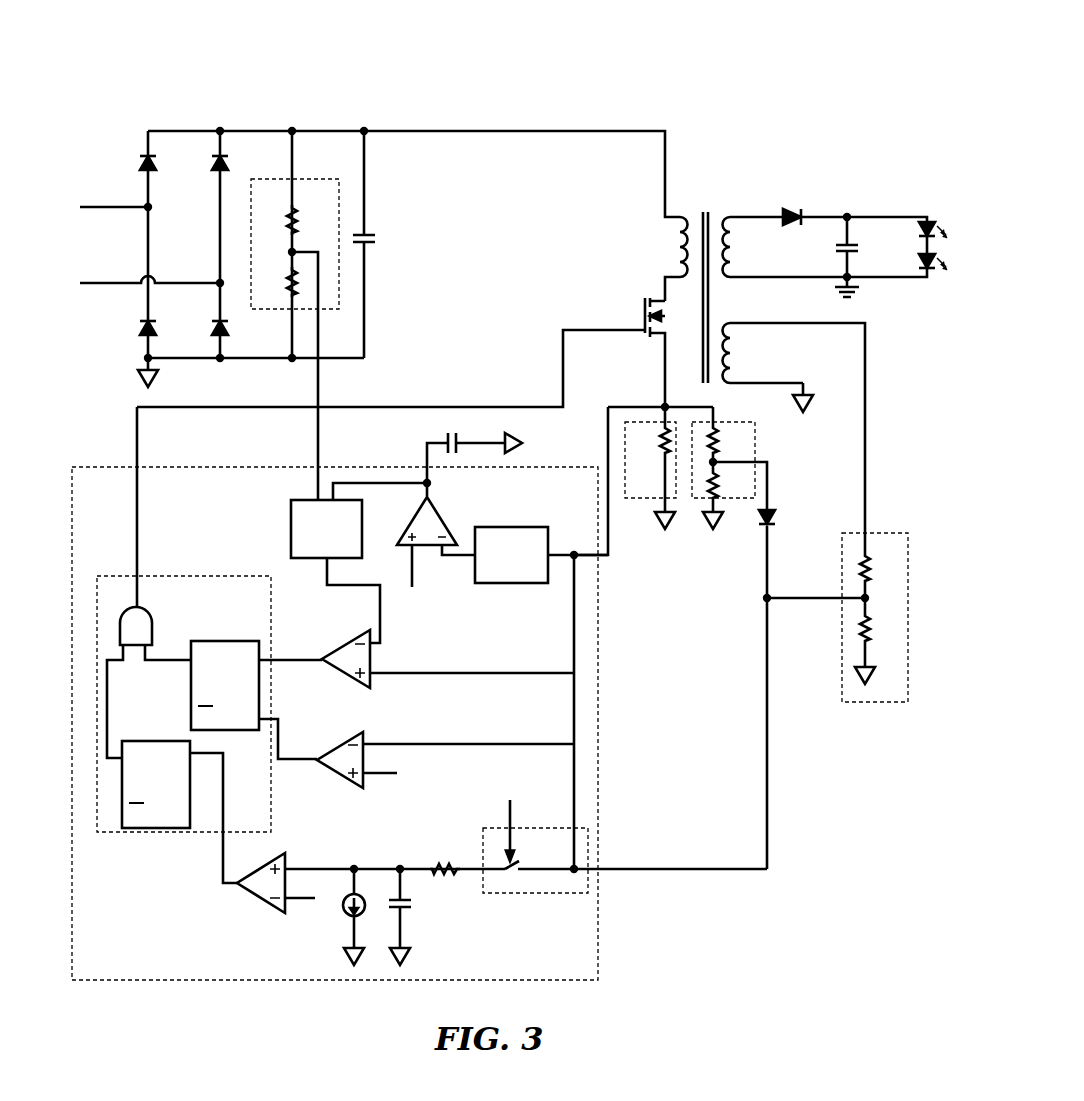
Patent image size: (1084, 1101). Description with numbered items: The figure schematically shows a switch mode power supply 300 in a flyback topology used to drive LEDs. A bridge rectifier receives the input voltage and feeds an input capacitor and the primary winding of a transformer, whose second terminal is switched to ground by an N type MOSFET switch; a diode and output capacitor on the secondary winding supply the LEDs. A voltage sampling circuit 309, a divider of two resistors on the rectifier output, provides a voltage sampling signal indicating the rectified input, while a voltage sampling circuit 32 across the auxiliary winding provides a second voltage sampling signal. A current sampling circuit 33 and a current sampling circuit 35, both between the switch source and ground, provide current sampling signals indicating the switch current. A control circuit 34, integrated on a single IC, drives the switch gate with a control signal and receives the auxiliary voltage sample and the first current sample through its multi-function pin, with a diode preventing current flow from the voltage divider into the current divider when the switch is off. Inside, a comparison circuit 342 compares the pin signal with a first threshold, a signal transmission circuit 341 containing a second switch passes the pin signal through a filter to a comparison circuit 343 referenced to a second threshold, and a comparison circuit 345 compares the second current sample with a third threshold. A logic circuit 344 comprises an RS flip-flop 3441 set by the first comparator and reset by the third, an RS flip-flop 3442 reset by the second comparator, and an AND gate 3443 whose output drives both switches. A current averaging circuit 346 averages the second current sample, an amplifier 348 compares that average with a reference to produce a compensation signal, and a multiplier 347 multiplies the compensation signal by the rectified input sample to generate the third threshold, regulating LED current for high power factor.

The switch mode power supply 300 is at (778, 111).
The voltage sampling circuit 309 is at (283, 312).
The voltage sampling circuit 32 is at (885, 703).
The current sampling circuit 33 is at (755, 425).
The control circuit 34 is at (107, 466).
The current sampling circuit 35 is at (657, 499).
The signal transmission circuit 341 is at (553, 895).
The comparison circuit 342 is at (347, 789).
The comparison circuit 343 is at (268, 908).
The logic circuit 344 is at (178, 832).
The comparison circuit 345 is at (348, 680).
The current averaging circuit 346 is at (485, 698).
The multiplier 347 is at (359, 563).
The amplifier 348 is at (446, 520).
The RS flip-flop 3441 is at (204, 641).
The RS flip-flop 3442 is at (127, 741).
The AND gate 3443 is at (152, 623).